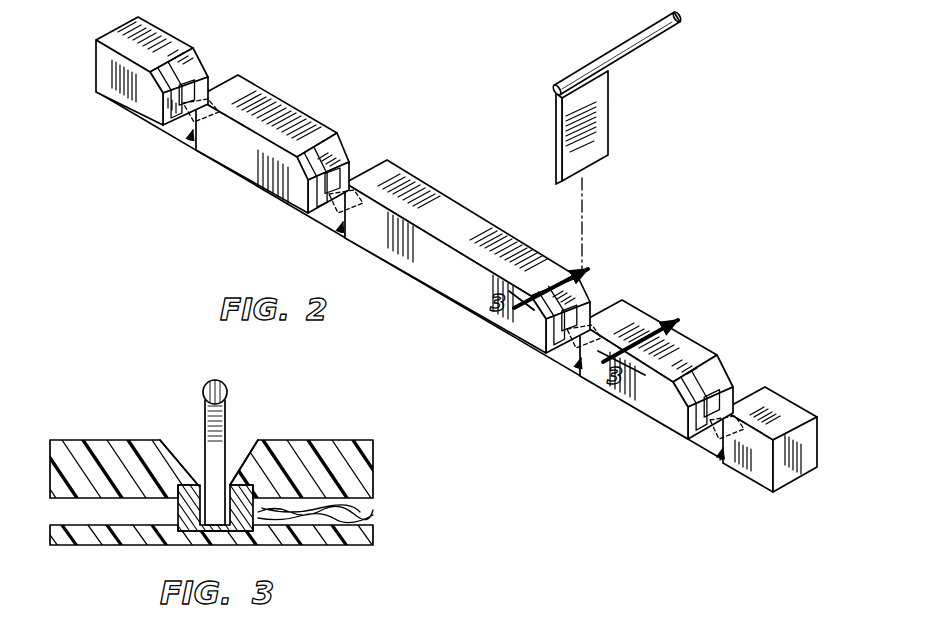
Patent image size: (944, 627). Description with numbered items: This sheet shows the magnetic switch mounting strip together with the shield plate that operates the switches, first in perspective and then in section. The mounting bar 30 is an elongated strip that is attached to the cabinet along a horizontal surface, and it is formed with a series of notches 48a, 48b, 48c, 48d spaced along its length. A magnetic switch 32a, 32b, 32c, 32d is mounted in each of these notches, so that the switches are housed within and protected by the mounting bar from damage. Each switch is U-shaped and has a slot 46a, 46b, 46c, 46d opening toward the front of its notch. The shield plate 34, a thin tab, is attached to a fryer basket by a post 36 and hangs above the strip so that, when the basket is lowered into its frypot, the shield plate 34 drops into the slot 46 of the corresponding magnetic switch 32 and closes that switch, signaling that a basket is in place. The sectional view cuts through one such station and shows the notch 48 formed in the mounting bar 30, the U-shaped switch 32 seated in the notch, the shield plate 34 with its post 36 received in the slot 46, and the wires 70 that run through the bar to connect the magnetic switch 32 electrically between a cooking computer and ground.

In FIG. 2, the mounting bar 30 is at (88, 70).
In FIG. 3, the mounting bar 30 is at (384, 470).
In FIG. 3, the magnetic switch 32 is at (205, 536).
In FIG. 2, the magnetic switch 32a is at (187, 150).
In FIG. 2, the magnetic switch 32b is at (341, 236).
In FIG. 2, the magnetic switch 32c is at (568, 374).
In FIG. 2, the magnetic switch 32d is at (724, 462).
In FIG. 2, the shield plate 34 is at (612, 127).
In FIG. 3, the shield plate 34 is at (234, 418).
In FIG. 2, the post 36 is at (617, 40).
In FIG. 3, the post 36 is at (233, 382).
In FIG. 3, the slot 46 is at (233, 472).
In FIG. 2, the slot 46a is at (173, 114).
In FIG. 2, the slot 46b is at (318, 203).
In FIG. 2, the slot 46c is at (557, 341).
In FIG. 2, the slot 46d is at (700, 428).
In FIG. 3, the notch 48 is at (195, 462).
In FIG. 2, the notch 48a is at (212, 73).
In FIG. 2, the notch 48b is at (356, 165).
In FIG. 2, the notch 48c is at (604, 298).
In FIG. 2, the notch 48d is at (741, 380).
In FIG. 3, the wires 70 is at (362, 512).